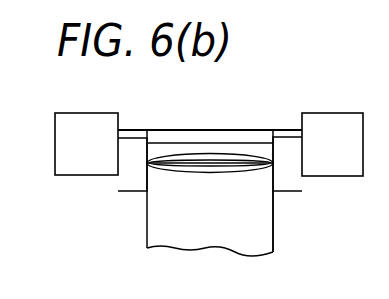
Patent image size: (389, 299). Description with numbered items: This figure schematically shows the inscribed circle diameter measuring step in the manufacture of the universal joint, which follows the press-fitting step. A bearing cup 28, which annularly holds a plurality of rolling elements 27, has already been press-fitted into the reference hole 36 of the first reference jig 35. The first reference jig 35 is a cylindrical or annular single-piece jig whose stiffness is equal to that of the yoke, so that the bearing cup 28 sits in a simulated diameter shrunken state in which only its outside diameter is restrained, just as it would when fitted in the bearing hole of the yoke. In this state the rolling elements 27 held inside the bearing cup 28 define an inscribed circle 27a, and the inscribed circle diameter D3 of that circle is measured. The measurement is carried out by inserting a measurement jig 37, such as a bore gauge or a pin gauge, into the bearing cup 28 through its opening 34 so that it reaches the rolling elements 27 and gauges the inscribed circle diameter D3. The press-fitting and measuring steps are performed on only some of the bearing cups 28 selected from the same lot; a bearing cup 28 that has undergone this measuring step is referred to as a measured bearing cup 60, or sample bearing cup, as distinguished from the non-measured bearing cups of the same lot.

The measured bearing cup 60 is at (210, 104).
The bearing cup 28 is at (196, 127).
The reference hole 36 is at (301, 128).
The first reference jig 35 is at (336, 113).
The rolling elements 27 is at (128, 178).
The opening 34 is at (210, 183).
The inscribed circle 27a is at (237, 175).
The inscribed circle diameter D3 is at (184, 165).
The measurement jig 37 is at (275, 232).